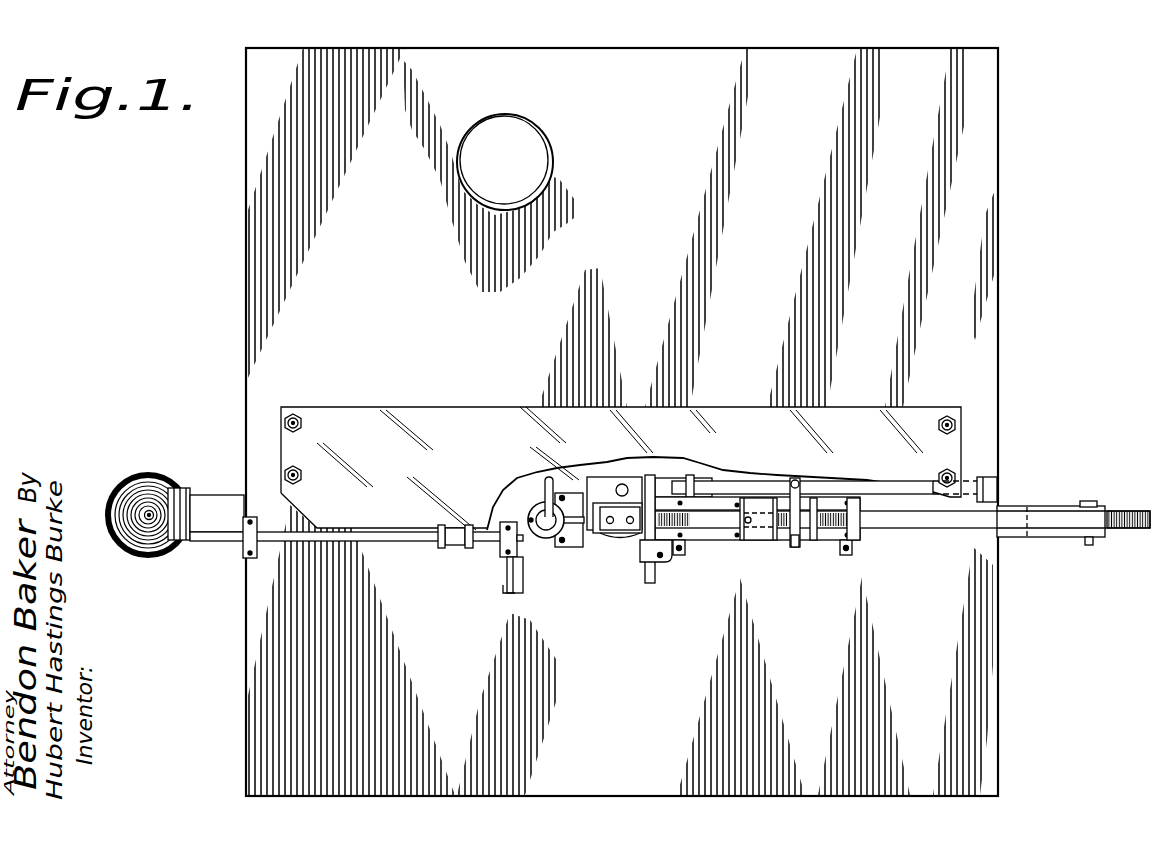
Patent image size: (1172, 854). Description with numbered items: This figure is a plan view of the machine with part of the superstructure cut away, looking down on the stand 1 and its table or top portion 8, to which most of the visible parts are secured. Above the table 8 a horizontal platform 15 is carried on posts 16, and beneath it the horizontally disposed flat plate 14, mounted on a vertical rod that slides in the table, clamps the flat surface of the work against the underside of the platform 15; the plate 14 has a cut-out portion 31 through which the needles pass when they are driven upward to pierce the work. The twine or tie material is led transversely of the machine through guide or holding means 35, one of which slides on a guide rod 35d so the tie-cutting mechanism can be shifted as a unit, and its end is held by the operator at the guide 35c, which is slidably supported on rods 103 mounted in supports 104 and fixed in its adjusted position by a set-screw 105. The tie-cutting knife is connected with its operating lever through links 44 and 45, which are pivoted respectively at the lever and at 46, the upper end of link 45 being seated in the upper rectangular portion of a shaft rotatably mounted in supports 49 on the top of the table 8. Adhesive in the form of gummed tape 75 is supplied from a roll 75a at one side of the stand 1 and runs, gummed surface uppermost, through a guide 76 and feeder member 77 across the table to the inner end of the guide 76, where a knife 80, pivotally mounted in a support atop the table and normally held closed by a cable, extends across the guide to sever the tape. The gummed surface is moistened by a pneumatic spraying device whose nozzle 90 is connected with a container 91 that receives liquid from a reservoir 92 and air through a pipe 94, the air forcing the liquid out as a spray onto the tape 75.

The stand 1 is at (1014, 237).
The table or top portion 8 is at (987, 130).
The reservoir 92 is at (535, 158).
The horizontal platform 15 is at (443, 422).
The posts 16 is at (300, 467).
The flat plate 14 is at (603, 483).
The pipe 94 is at (545, 480).
The nozzle 90 is at (582, 512).
The container 91 is at (548, 518).
The cut-out portion 31 is at (603, 515).
The knife 80 is at (640, 542).
The rods 103 is at (725, 483).
The supports 104 is at (690, 478).
The set-screw 105 is at (792, 477).
The guide 76 is at (827, 507).
The feeder member 77 is at (763, 535).
The guide or holding means 35c is at (797, 545).
The gummed tape 75 is at (925, 525).
The tape roll 75a is at (1117, 512).
The guide or holding means 35 is at (187, 488).
The guide rod 35d is at (413, 540).
The supports 49 is at (250, 538).
The link 45 is at (517, 543).
The pivot 46 is at (517, 575).
The link 44 is at (505, 592).